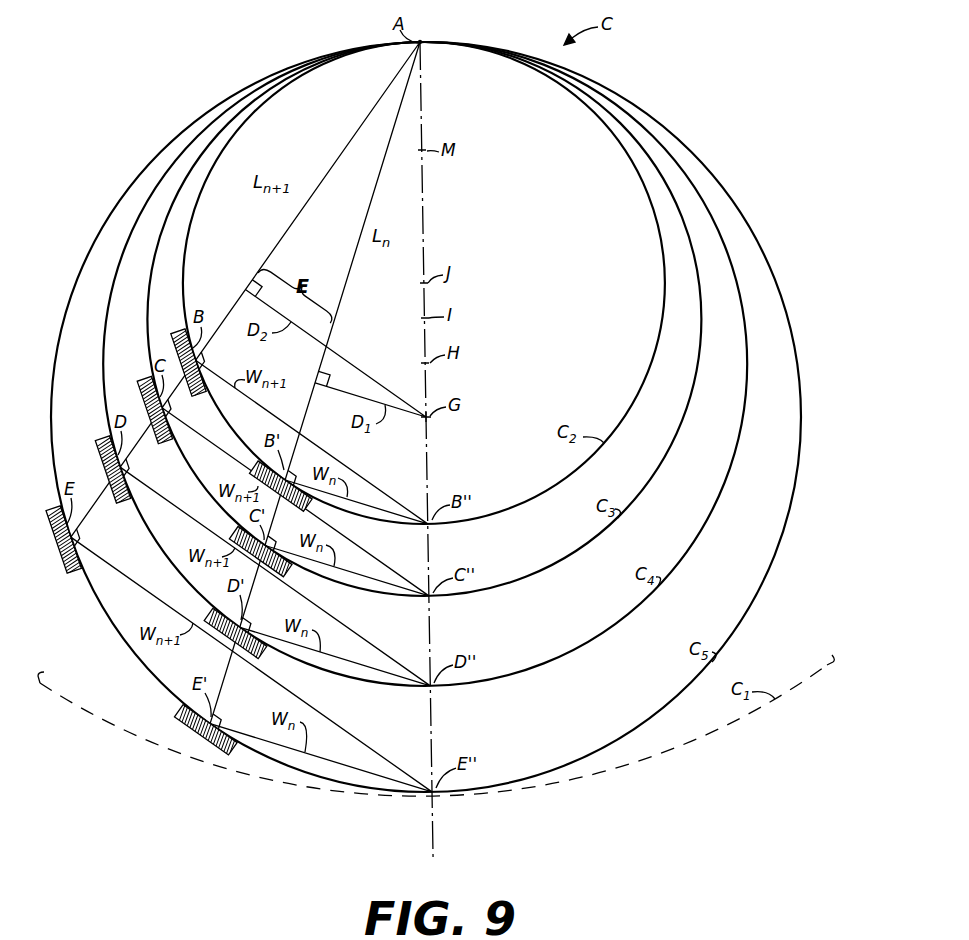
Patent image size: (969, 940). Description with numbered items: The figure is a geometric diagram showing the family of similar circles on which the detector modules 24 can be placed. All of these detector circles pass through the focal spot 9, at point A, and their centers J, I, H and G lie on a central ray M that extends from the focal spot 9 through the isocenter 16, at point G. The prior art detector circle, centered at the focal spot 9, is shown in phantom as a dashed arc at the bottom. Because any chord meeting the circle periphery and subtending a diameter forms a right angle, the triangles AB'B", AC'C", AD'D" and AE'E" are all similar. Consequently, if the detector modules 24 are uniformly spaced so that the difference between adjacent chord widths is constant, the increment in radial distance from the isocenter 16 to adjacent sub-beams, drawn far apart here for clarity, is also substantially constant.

The focal spot 9 is at (424, 41).
The isocenter 16 is at (429, 421).
The detector module 24 is at (248, 466).